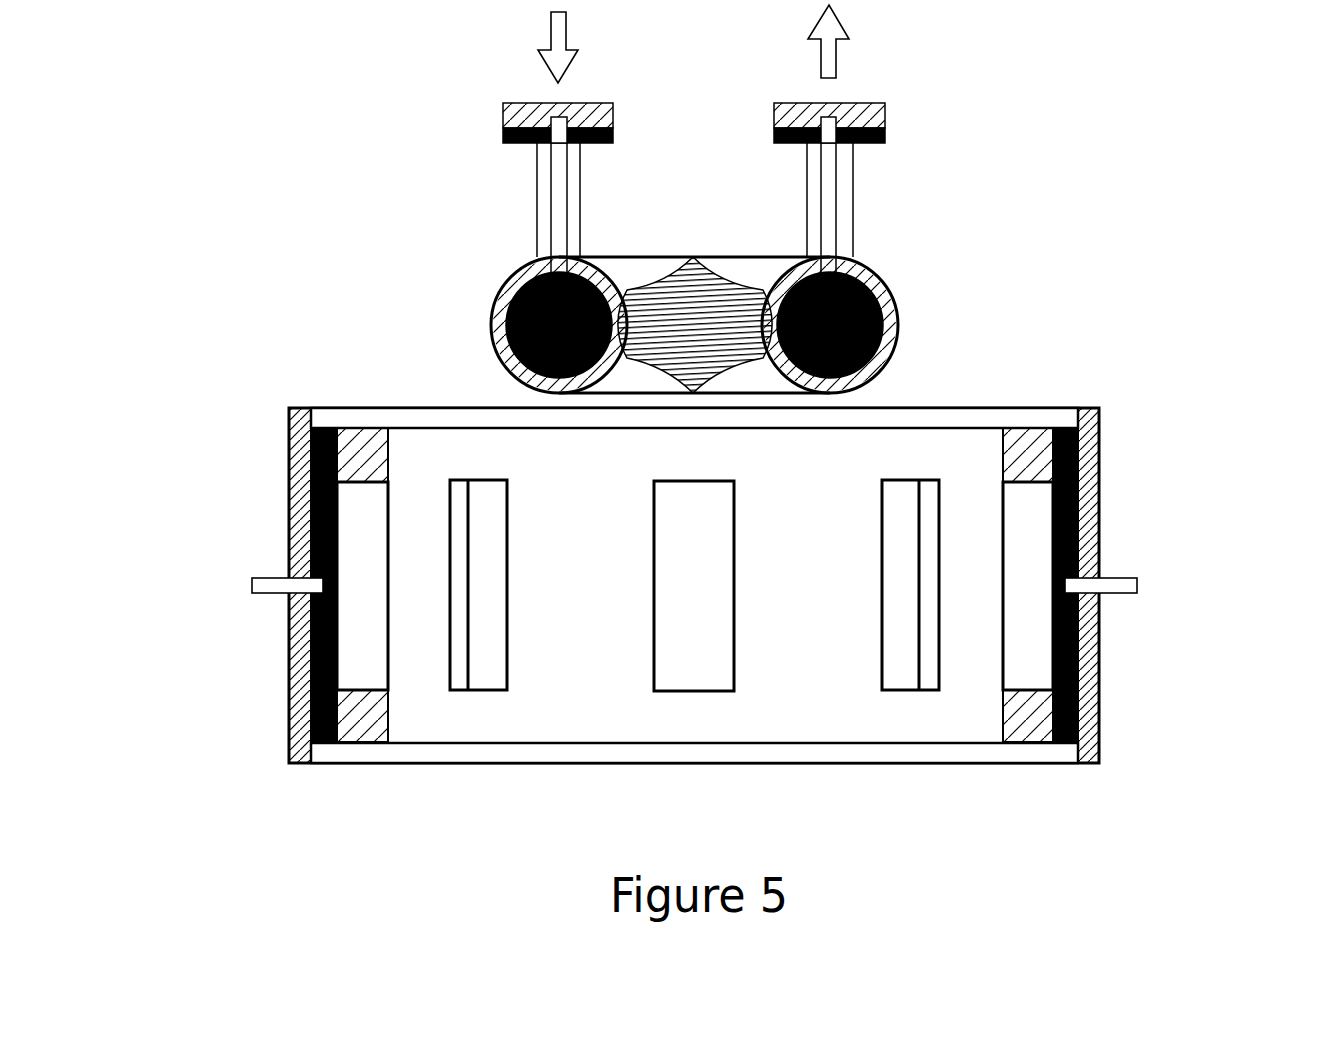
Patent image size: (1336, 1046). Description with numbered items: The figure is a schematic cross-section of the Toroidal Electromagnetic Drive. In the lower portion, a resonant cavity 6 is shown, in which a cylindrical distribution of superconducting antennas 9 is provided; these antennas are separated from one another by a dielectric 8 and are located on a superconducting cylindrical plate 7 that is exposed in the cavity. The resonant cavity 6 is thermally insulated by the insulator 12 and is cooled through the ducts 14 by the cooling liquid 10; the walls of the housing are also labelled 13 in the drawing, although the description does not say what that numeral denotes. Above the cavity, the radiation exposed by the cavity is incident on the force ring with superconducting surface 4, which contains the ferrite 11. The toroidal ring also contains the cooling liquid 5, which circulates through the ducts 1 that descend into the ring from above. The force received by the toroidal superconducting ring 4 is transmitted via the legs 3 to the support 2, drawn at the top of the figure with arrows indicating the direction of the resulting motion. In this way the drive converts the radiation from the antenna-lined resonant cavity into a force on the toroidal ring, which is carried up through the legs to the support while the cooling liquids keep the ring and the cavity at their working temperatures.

The ducts 1 is at (693, 194).
The support 2 is at (749, 113).
The legs 3 is at (766, 200).
The force ring with superconducting surface 4 is at (743, 310).
The cooling liquid 5 is at (750, 325).
The resonant cavity 6 is at (577, 517).
The superconducting cylindrical plate 7 is at (813, 585).
The dielectric 8 is at (811, 547).
The superconducting antennas 9 is at (424, 537).
The cooling liquid 10 is at (593, 585).
The ferrite 11 is at (633, 305).
The insulator 12 is at (791, 540).
The housing wall 13 is at (788, 585).
The ducts 14 is at (623, 566).